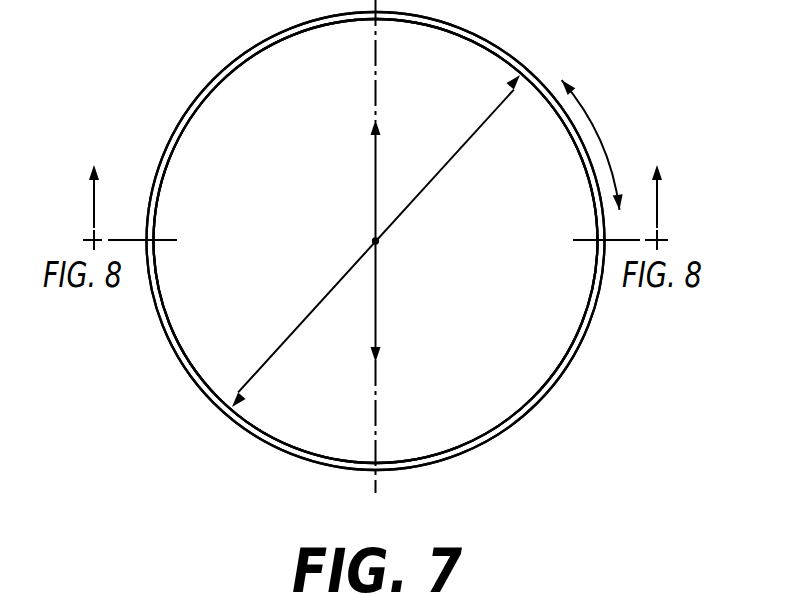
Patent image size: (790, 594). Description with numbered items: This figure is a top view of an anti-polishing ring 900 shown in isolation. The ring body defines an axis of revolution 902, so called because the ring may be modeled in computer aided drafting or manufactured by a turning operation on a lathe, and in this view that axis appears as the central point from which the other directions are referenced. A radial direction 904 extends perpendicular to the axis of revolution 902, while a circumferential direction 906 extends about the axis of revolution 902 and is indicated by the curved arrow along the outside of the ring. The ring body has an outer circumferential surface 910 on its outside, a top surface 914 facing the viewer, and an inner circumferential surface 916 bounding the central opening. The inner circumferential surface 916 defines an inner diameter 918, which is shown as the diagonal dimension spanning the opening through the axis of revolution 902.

The anti-polishing ring 900 is at (444, 467).
The axis of revolution 902 is at (378, 243).
The radial direction 904 is at (375, 308).
The circumferential direction 906 is at (590, 122).
The outer circumferential surface 910 is at (578, 383).
The top surface 914 is at (588, 313).
The inner circumferential surface 916 is at (173, 143).
The inner diameter 918 is at (453, 153).